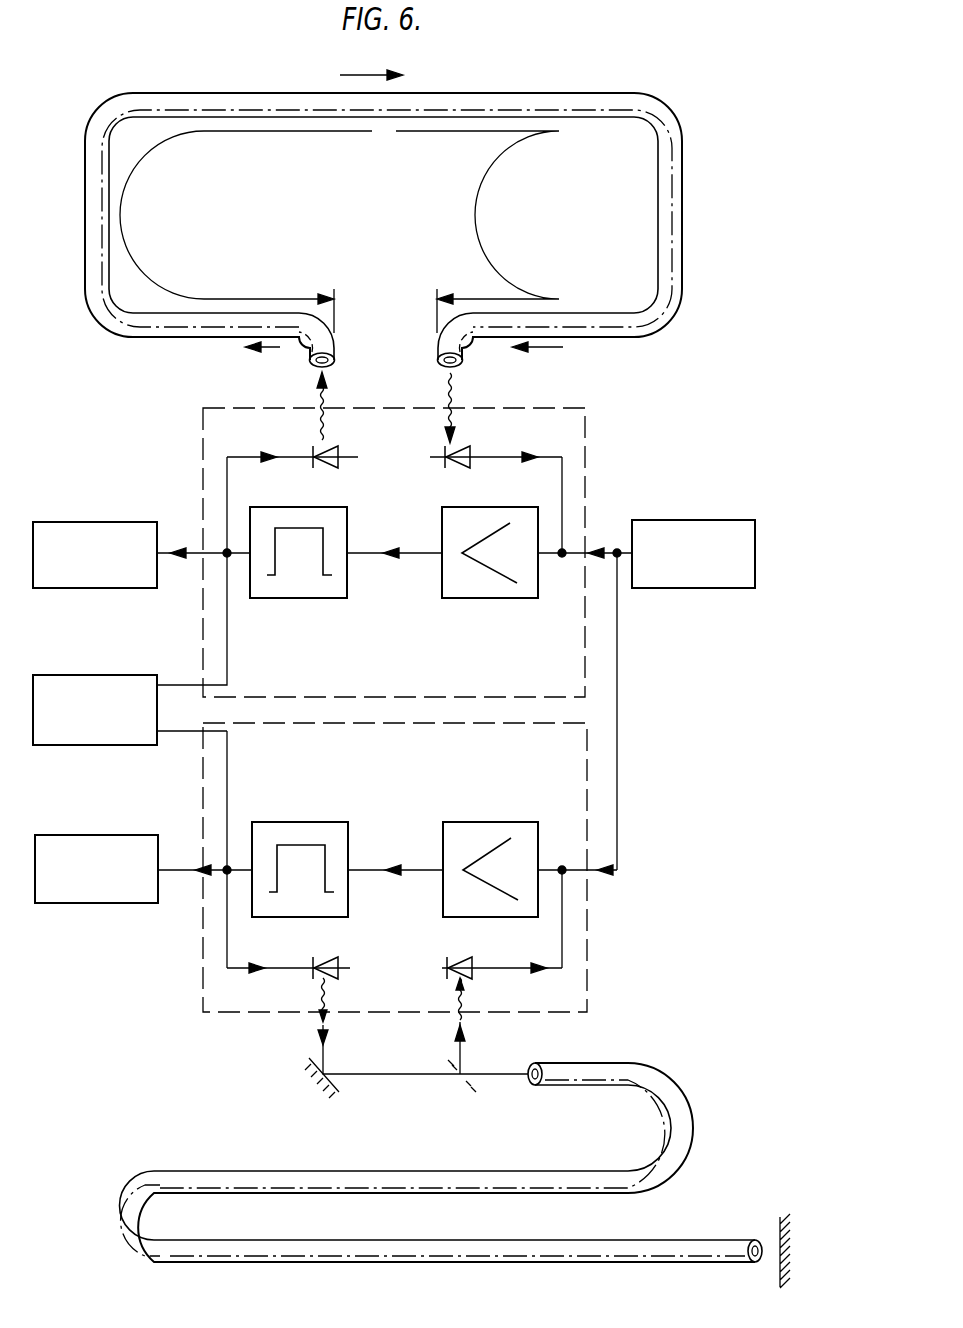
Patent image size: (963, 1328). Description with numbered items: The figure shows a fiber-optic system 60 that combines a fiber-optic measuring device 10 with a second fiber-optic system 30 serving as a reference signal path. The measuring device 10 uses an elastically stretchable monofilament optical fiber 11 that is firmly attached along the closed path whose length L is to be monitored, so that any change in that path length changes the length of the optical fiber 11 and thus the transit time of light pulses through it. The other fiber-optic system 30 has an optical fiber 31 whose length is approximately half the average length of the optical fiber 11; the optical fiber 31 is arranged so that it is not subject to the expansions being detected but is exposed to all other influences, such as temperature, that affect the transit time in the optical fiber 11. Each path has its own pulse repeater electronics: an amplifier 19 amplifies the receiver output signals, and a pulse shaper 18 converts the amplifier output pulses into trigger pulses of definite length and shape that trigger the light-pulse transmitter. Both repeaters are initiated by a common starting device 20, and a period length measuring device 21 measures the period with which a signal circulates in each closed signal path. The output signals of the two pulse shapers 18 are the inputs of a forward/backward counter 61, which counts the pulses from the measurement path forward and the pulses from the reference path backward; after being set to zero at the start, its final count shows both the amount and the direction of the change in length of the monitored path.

The fiber-optic measuring device 10 is at (660, 362).
The optical fiber 11 is at (528, 102).
The pulse shaper 18 is at (295, 598).
The amplifier 19 is at (476, 598).
The starting device 20 is at (675, 520).
The period length measuring device 21 is at (93, 522).
The fiber-optic system 30 is at (664, 1026).
The optical fiber 31 is at (387, 1178).
The fiber-optic system 60 is at (686, 685).
The forward/backward counter 61 is at (98, 675).